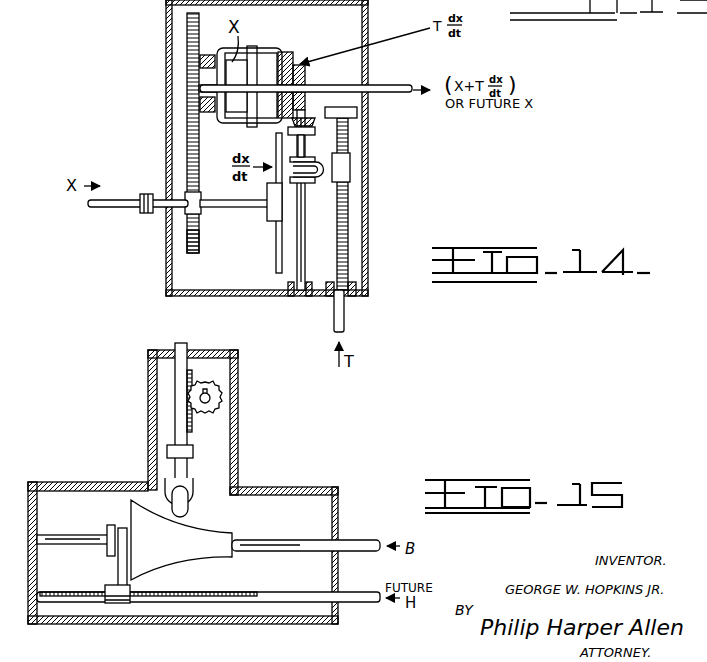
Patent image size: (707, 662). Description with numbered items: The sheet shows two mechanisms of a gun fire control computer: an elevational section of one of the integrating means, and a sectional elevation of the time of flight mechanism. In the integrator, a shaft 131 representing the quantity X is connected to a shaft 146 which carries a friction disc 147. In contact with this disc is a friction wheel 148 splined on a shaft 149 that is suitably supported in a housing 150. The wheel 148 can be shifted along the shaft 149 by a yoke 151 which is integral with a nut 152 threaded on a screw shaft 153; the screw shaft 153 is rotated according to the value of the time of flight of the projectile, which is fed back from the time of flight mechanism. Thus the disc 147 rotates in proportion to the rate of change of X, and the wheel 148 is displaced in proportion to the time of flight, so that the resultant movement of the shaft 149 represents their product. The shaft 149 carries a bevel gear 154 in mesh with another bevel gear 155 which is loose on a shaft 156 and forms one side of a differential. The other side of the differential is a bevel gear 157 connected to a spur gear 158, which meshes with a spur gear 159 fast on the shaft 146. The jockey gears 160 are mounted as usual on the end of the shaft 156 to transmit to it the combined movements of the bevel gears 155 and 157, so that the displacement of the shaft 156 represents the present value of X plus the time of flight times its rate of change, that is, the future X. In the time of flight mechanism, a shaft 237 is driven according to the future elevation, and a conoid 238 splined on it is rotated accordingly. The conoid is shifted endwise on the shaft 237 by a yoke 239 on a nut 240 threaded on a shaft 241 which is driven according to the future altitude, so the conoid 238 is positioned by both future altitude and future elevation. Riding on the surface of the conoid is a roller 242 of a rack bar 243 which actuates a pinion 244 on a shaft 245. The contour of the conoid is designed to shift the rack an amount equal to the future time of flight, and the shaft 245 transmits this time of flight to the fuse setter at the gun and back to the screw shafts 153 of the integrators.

In FIG. 14, the shaft 131 is at (122, 208).
In FIG. 14, the shaft 146 is at (249, 208).
In FIG. 14, the friction disc 147 is at (276, 259).
In FIG. 14, the friction wheel 148 is at (313, 164).
In FIG. 14, the shaft 149 is at (306, 247).
In FIG. 14, the housing 150 is at (365, 162).
In FIG. 14, the yoke 151 is at (309, 184).
In FIG. 14, the nut 152 is at (350, 177).
In FIG. 14, the screw shaft 153 is at (344, 325).
In FIG. 14, the bevel gear 154 is at (296, 122).
In FIG. 14, the bevel gear 155 is at (299, 63).
In FIG. 14, the shaft 156 is at (380, 85).
In FIG. 14, the bevel gear 157 is at (221, 92).
In FIG. 14, the spur gear 158 is at (190, 122).
In FIG. 14, the spur gear 159 is at (191, 247).
In FIG. 14, the jockey gears 160 is at (264, 51).
In FIG. 15, the shaft 237 is at (350, 541).
In FIG. 15, the conoid 238 is at (188, 554).
In FIG. 15, the yoke 239 is at (117, 571).
In FIG. 15, the nut 240 is at (121, 606).
In FIG. 15, the shaft 241 is at (238, 604).
In FIG. 15, the roller 242 is at (190, 514).
In FIG. 15, the rack bar 243 is at (183, 417).
In FIG. 15, the pinion 244 is at (219, 392).
In FIG. 15, the shaft 245 is at (210, 401).